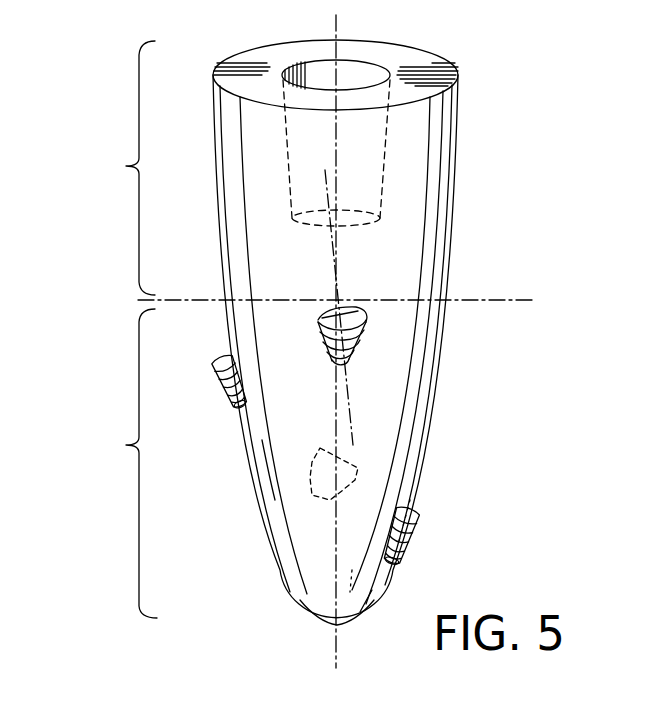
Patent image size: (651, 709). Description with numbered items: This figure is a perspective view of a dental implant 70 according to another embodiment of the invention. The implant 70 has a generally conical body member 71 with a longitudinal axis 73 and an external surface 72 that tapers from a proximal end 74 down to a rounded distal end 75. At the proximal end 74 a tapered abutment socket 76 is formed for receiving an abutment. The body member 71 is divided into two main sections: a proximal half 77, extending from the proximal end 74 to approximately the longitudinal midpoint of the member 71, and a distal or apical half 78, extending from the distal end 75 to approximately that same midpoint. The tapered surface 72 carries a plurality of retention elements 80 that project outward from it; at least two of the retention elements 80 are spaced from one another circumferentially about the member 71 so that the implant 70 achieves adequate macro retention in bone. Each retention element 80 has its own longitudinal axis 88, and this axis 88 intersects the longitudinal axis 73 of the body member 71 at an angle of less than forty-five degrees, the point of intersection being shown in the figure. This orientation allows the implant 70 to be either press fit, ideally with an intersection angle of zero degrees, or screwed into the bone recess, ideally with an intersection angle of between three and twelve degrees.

The dental implant 70 is at (128, 338).
The body member 71 is at (410, 265).
The external surface 72 is at (427, 452).
The longitudinal axis 73 is at (343, 641).
The proximal end 74 is at (415, 58).
The distal end 75 is at (328, 625).
The tapered abutment socket 76 is at (385, 188).
The proximal half 77 is at (194, 317).
The distal half 78 is at (227, 463).
The retention elements 80 is at (318, 328).
The longitudinal axis of the retention element 88 is at (355, 432).